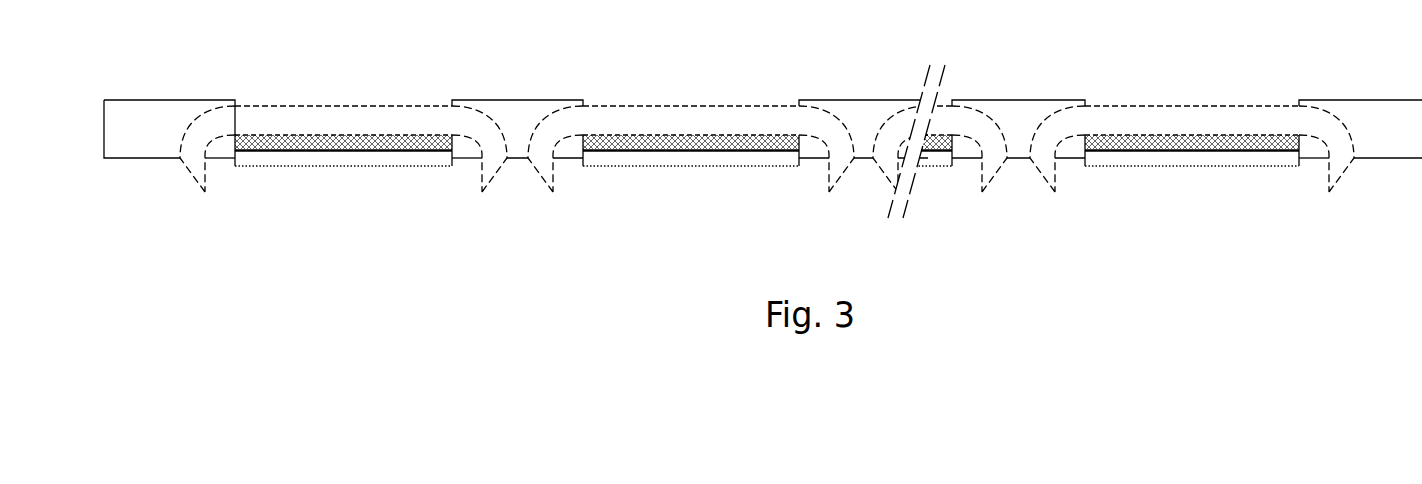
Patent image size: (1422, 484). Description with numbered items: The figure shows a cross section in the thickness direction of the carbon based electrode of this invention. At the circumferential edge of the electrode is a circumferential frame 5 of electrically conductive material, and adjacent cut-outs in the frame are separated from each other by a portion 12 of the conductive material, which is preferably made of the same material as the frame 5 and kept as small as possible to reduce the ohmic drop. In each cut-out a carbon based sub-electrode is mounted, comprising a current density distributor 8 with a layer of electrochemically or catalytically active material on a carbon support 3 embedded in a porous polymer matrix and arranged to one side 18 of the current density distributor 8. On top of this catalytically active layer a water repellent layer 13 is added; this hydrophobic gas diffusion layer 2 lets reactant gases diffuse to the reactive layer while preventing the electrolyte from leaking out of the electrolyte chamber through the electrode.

The hydrophobic gas diffusion layer 2 is at (1143, 156).
The carbon support 3 is at (732, 145).
The circumferential frame 5 is at (145, 120).
The current density distributor 8 is at (343, 120).
The portion of conductive material 12 is at (518, 98).
The water repellent layer 13 is at (658, 158).
The side of the current density distributor 18 is at (632, 135).